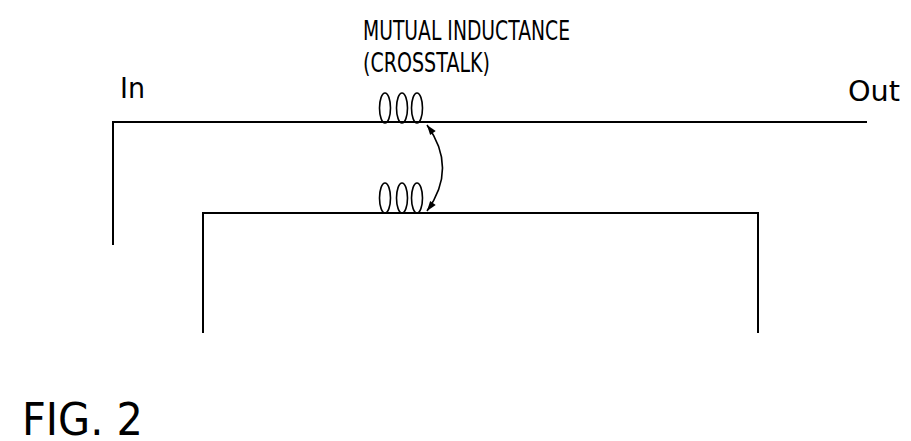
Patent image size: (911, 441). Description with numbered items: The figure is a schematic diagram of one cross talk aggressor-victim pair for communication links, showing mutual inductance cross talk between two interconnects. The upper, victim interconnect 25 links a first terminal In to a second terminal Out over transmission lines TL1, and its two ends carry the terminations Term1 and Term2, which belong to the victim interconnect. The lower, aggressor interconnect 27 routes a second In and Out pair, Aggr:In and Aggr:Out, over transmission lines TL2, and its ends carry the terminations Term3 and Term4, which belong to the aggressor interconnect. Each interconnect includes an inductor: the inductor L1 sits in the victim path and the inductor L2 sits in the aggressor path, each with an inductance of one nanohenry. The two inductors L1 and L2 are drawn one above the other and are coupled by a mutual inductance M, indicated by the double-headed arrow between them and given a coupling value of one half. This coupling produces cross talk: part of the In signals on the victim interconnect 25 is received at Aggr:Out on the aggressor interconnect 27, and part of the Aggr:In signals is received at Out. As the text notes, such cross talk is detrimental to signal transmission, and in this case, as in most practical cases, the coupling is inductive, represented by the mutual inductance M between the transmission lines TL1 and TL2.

The victim transmission line (In to Out) 25 is at (162, 113).
The aggressor transmission line (Aggr: in to Aggr: out) 27 is at (542, 203).
The inductor L1 is at (387, 124).
The inductor L2 is at (403, 214).
The transmission lines TL1 is at (722, 122).
The transmission lines TL2 is at (680, 214).
The termination Term1 is at (100, 238).
The termination Term2 is at (821, 123).
The termination Term3 is at (203, 305).
The termination Term4 is at (758, 305).
The mutual inductance M is at (466, 168).